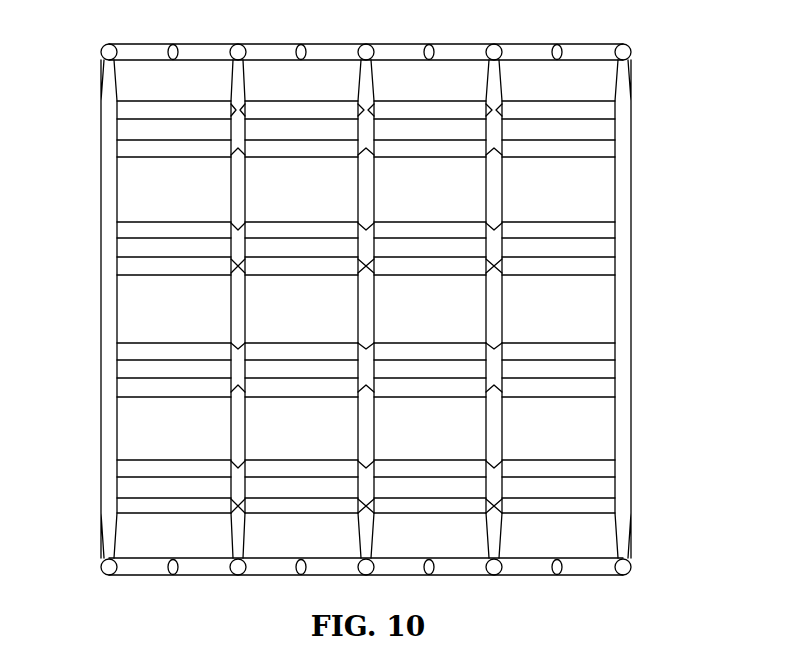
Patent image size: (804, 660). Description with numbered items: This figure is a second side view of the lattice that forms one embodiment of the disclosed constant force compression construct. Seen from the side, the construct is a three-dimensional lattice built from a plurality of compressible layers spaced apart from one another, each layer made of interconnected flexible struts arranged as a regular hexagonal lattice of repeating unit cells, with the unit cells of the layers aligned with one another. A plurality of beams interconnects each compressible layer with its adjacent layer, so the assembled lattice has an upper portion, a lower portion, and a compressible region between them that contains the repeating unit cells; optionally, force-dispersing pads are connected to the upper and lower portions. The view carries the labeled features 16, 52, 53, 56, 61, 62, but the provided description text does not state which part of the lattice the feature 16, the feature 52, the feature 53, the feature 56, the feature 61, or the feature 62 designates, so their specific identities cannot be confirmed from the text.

The lattice panel 16 is at (187, 510).
The vertical post segments 52 is at (365, 313).
The vertical posts 53 is at (490, 93).
The horizontal rails 56 is at (457, 470).
The top rail 61 is at (241, 50).
The bottom rail 62 is at (288, 569).